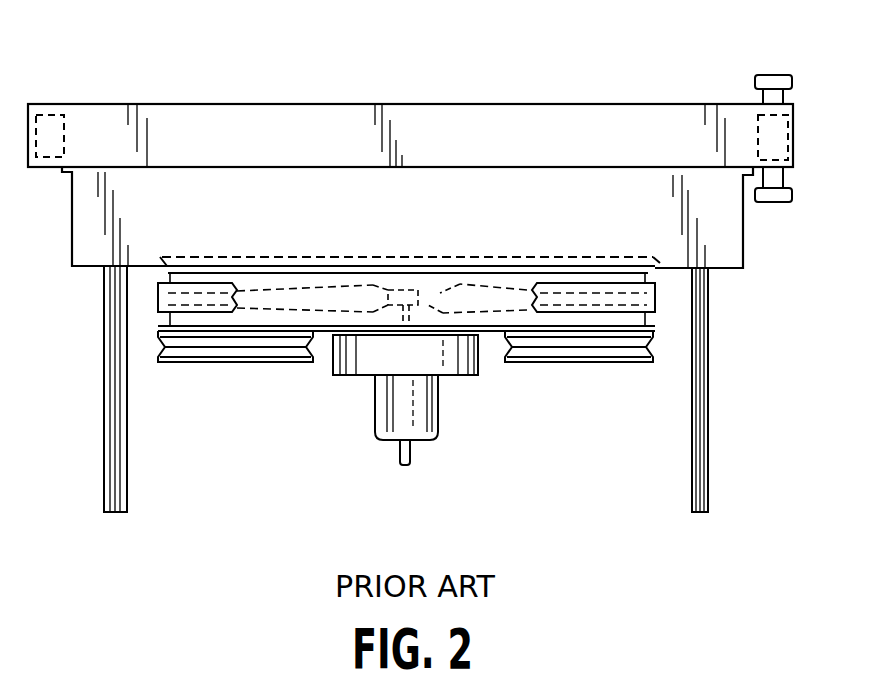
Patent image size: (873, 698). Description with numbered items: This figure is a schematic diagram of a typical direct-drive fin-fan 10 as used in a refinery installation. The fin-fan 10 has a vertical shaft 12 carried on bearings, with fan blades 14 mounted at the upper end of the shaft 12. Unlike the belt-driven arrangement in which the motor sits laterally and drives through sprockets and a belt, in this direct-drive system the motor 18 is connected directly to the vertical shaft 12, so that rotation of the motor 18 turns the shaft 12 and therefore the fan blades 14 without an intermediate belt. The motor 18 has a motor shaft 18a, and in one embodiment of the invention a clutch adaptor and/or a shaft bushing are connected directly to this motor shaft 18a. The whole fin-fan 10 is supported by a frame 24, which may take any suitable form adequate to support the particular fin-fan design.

The fin-fan 10 is at (658, 90).
The vertical shaft 12 is at (425, 305).
The fan blades 14 is at (478, 300).
The motor 18 is at (438, 410).
The motor shaft 18a is at (410, 455).
The frame 24 is at (103, 470).